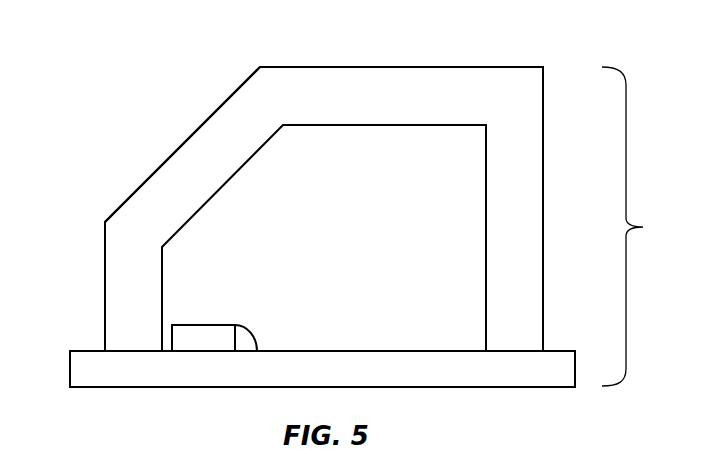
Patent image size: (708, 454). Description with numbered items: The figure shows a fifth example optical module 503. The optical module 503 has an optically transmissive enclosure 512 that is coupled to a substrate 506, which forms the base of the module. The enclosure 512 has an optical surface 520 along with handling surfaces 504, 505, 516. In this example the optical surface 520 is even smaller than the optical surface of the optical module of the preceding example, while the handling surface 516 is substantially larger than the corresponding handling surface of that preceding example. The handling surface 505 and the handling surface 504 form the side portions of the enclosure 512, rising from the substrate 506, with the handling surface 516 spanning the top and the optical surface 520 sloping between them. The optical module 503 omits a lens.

The optical module 503 is at (641, 226).
The handling surface 504 is at (543, 195).
The handling surface 505 is at (105, 266).
The substrate 506 is at (434, 351).
The optically transmissive enclosure 512 is at (69, 299).
The handling surface 516 is at (357, 67).
The optical surface 520 is at (129, 196).